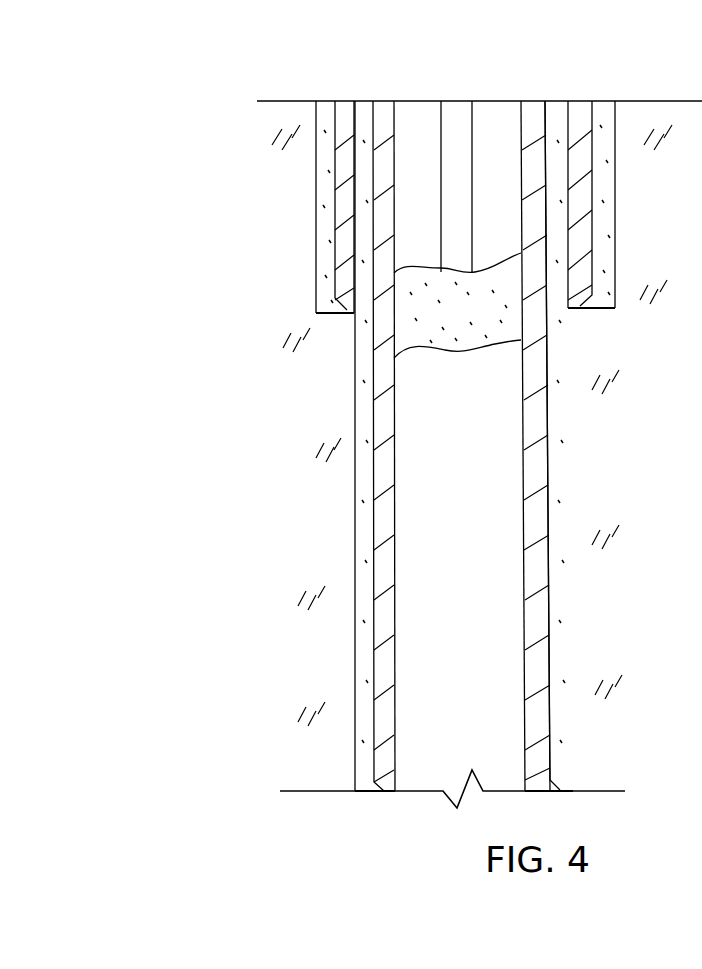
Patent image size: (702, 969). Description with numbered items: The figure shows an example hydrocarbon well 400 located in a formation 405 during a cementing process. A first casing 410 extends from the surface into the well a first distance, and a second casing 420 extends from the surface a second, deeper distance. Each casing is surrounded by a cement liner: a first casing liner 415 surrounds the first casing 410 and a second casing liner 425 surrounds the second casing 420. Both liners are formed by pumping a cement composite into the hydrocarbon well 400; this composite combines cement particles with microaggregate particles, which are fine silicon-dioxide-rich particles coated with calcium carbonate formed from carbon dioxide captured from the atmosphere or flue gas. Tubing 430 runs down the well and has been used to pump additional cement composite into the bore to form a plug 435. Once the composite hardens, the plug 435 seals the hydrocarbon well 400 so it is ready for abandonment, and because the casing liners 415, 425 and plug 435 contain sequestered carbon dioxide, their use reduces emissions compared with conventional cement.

The hydrocarbon well 400 is at (224, 79).
The formation 405 is at (668, 215).
The first casing 410 is at (345, 262).
The first casing liner 415 is at (328, 205).
The second casing 420 is at (386, 555).
The second casing liner 425 is at (365, 452).
The tubing 430 is at (460, 125).
The plug 435 is at (490, 325).